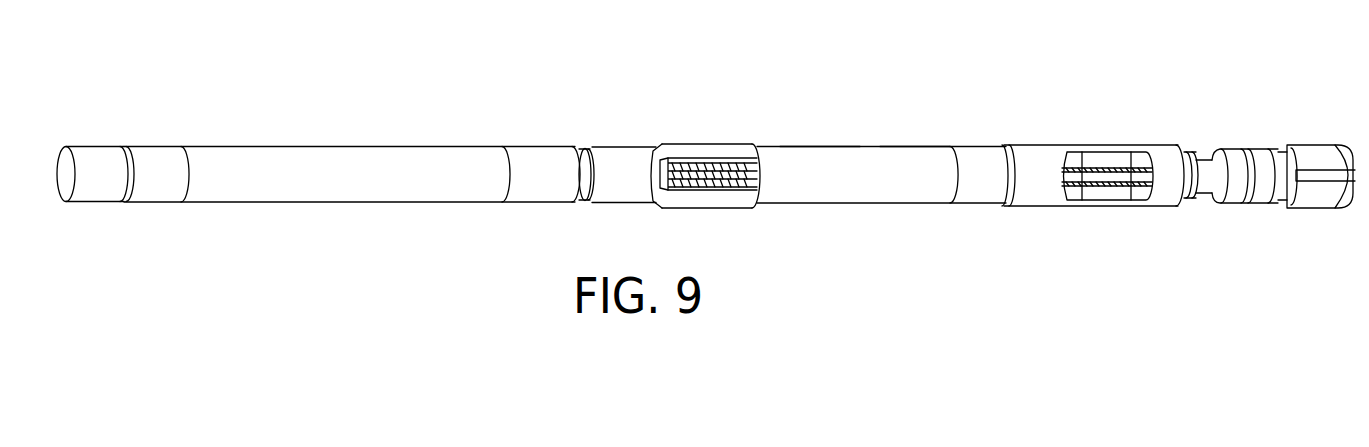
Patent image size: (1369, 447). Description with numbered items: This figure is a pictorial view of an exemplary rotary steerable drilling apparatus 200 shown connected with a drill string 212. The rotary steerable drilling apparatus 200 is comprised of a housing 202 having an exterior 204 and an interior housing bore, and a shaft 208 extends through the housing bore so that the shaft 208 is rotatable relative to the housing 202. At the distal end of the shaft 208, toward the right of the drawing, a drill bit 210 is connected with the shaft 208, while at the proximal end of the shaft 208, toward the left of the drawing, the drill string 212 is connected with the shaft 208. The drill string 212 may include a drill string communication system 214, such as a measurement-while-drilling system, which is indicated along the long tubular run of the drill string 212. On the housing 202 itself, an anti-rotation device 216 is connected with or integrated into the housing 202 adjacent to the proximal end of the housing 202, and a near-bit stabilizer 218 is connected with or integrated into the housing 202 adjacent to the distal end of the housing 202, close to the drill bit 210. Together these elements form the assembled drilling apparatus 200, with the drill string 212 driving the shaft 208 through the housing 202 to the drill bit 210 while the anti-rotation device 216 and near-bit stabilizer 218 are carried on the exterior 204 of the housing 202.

The rotary steerable drilling apparatus 200 is at (838, 203).
The housing 202 is at (898, 152).
The exterior 204 is at (803, 146).
The shaft 208 is at (1200, 197).
The drill bit 210 is at (1312, 200).
The drill string 212 is at (118, 203).
The drill string communication system 214 is at (379, 203).
The anti-rotation device 216 is at (702, 144).
The near-bit stabilizer 218 is at (1088, 150).